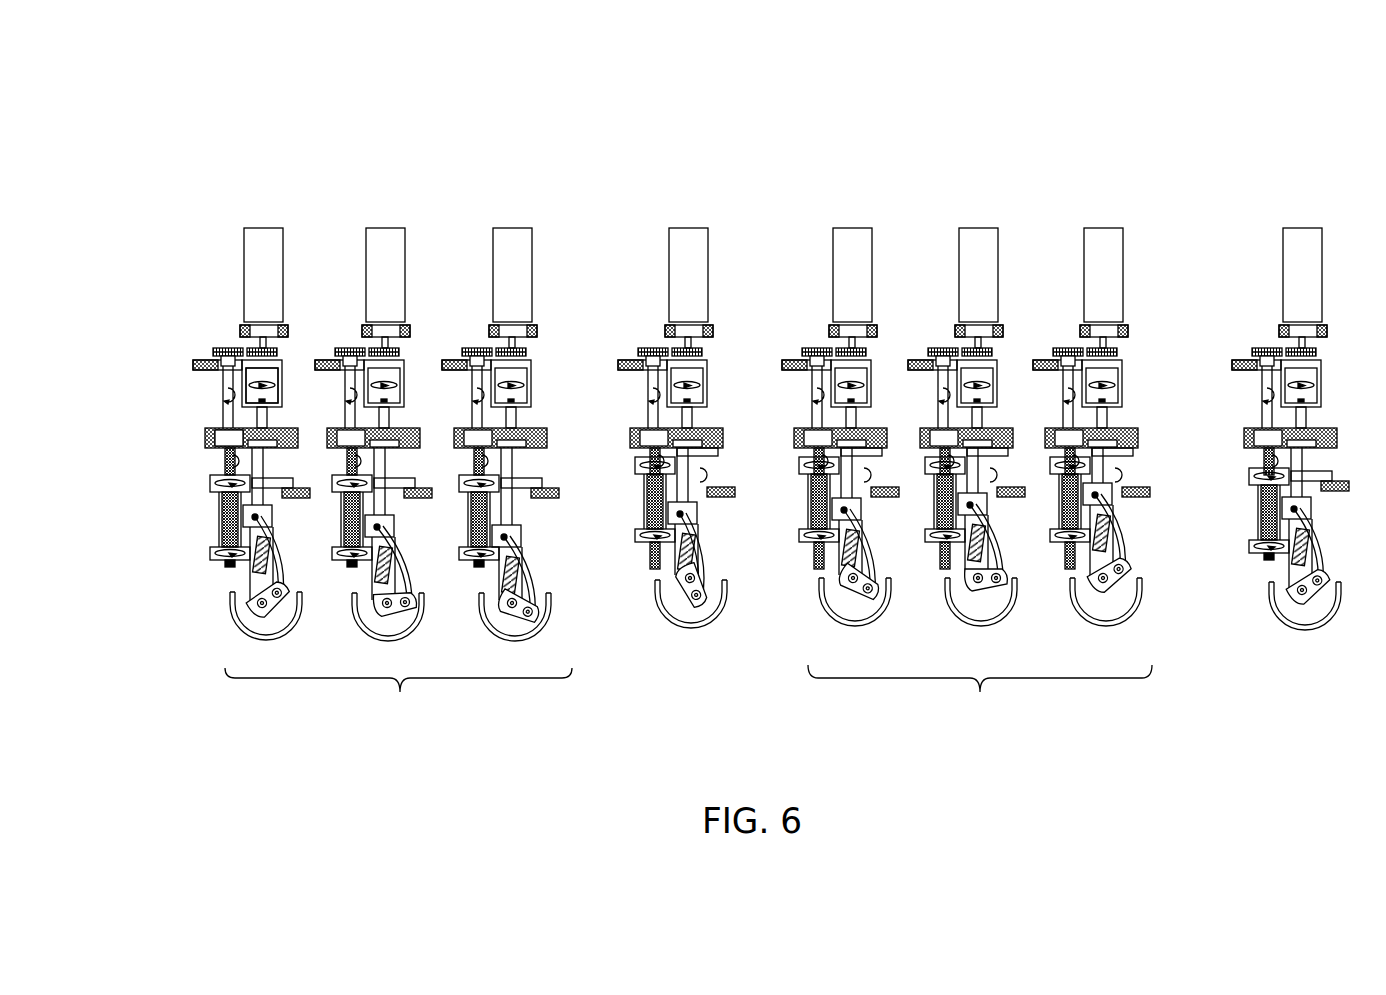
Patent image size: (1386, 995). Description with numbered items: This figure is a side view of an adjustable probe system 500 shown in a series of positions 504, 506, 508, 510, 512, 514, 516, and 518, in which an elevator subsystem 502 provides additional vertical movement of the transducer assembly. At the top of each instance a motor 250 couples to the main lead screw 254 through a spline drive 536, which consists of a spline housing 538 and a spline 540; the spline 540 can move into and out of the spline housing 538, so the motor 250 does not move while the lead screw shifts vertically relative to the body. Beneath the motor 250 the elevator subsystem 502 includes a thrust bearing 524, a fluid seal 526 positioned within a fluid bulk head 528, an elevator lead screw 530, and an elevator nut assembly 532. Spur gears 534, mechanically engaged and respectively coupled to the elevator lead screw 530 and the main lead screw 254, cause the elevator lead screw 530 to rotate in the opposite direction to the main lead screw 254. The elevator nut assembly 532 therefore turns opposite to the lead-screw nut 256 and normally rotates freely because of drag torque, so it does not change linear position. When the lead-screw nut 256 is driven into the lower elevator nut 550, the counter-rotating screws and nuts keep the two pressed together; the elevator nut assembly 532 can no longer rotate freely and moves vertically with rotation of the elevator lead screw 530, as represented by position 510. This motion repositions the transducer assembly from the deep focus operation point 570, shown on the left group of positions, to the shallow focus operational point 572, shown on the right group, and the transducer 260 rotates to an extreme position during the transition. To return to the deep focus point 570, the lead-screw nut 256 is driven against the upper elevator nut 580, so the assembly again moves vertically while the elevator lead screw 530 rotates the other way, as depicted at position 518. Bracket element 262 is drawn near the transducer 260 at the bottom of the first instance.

The adjustable probe system 500 is at (255, 95).
The elevator subsystem 502 is at (207, 335).
The position 504 is at (262, 186).
The position 506 is at (384, 186).
The position 508 is at (511, 186).
The position 510 is at (687, 186).
The position 512 is at (851, 186).
The position 514 is at (977, 186).
The position 516 is at (1102, 186).
The position 518 is at (1301, 186).
The motor 250 is at (244, 250).
The main lead screw 254 is at (255, 568).
The lead-screw nut 256 is at (273, 520).
The transducer 260 is at (235, 618).
The bracket inner wall 262 is at (296, 628).
The thrust bearing 524 is at (200, 366).
The fluid seal 526 is at (205, 433).
The fluid bulk head 528 is at (206, 447).
The elevator lead screw 530 is at (238, 461).
The elevator nut assembly 532 is at (206, 522).
The spur gears 534 is at (250, 351).
The spline drive 536 is at (291, 376).
The spline housing 538 is at (284, 362).
The spline 540 is at (260, 416).
The lower elevator nut 550 is at (210, 556).
The upper elevator nut 580 is at (210, 484).
The deep focus operation point 570 is at (398, 723).
The shallow focus operational point 572 is at (980, 721).